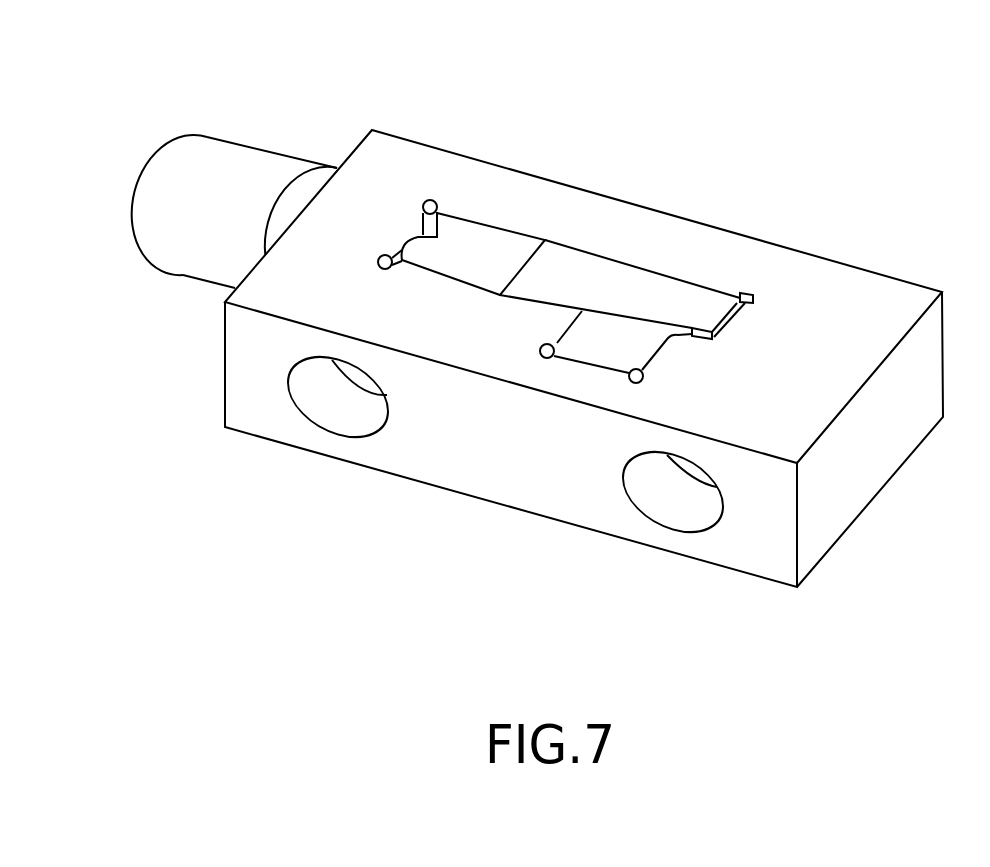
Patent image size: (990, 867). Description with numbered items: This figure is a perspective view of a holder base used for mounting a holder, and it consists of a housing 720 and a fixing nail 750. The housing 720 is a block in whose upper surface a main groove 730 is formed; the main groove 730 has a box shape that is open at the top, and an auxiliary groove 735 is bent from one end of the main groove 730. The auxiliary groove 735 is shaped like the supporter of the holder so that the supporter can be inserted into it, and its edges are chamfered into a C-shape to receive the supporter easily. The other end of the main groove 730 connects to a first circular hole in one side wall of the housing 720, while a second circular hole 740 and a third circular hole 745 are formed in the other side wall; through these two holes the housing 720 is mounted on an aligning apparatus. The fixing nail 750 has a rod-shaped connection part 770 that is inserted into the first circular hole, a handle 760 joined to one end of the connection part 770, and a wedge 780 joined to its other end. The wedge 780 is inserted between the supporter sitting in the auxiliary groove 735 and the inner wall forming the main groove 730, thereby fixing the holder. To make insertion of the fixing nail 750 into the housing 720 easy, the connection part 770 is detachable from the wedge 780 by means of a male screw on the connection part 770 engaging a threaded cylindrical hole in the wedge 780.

The housing 720 is at (838, 267).
The main groove 730 is at (502, 245).
The auxiliary groove 735 is at (598, 335).
The second circular hole 740 is at (328, 397).
The third circular hole 745 is at (655, 503).
The fixing nail 750 is at (508, 332).
The handle 760 is at (203, 158).
The connection part 770 is at (443, 252).
The wedge 780 is at (610, 282).